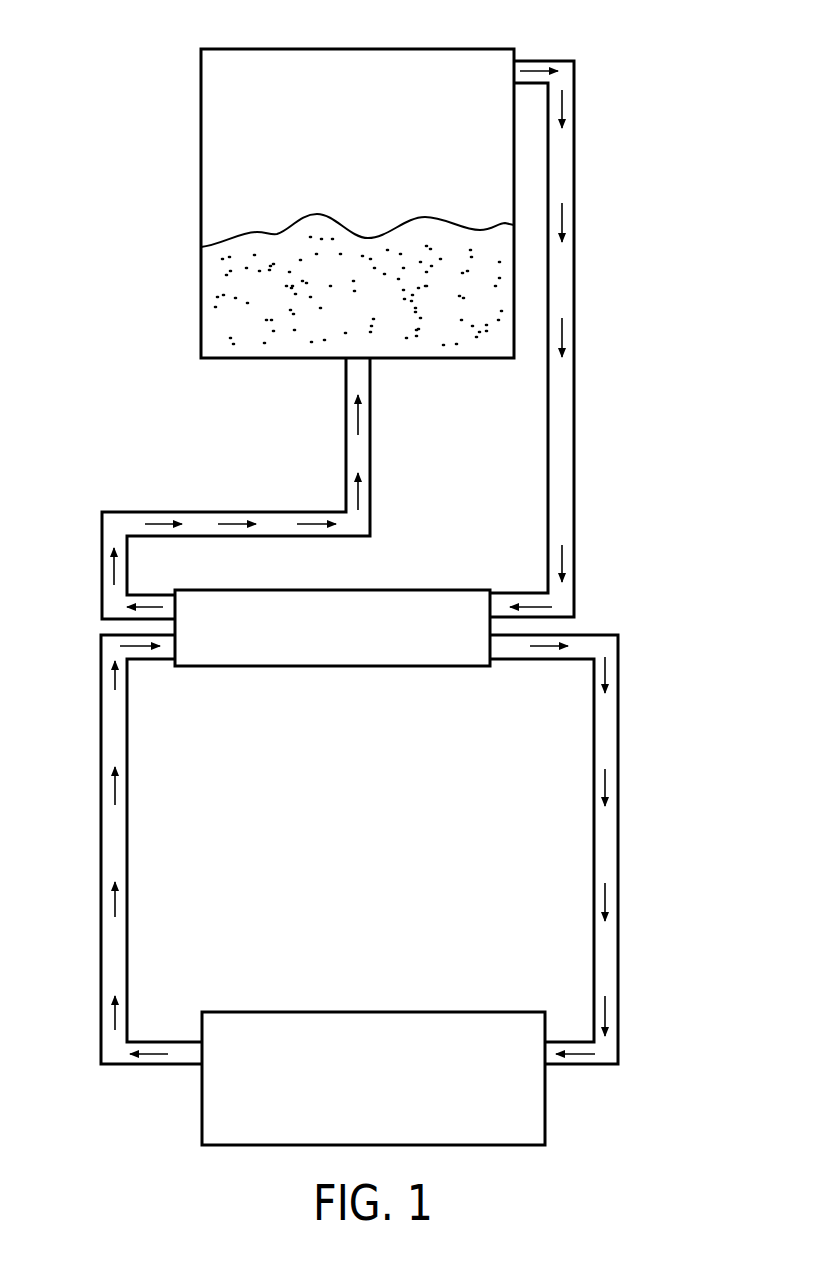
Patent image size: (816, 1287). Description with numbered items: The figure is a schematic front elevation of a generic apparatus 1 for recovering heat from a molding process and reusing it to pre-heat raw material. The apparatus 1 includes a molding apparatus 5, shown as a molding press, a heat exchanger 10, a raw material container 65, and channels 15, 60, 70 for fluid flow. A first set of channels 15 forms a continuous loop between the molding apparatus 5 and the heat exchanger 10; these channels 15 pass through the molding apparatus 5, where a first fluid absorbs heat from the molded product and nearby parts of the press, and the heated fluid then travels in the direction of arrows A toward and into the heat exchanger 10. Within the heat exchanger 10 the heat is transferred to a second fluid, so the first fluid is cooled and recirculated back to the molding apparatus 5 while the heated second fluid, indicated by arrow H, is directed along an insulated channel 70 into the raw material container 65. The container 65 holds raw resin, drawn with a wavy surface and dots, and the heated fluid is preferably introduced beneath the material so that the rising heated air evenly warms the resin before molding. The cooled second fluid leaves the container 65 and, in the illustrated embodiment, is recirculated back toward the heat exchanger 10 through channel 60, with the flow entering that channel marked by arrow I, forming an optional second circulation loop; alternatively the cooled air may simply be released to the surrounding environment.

The apparatus 1 is at (687, 82).
The molding apparatus 5 is at (387, 1092).
The heat exchanger 10 is at (347, 646).
The channels 15 is at (101, 960).
The channel 60 is at (575, 393).
The raw material container 65 is at (201, 139).
The channel 70 is at (185, 512).
The arrows A is at (115, 787).
The arrow H is at (246, 518).
The fluid flow into conduit I is at (562, 105).